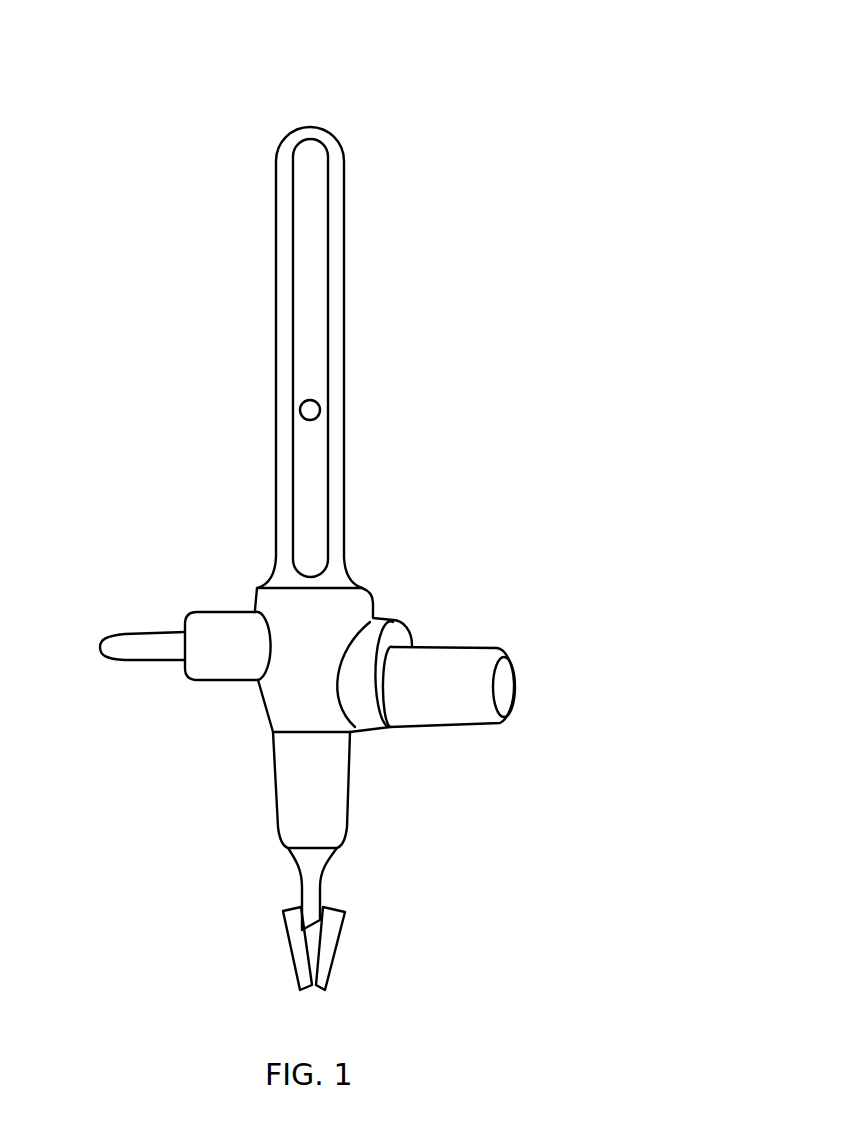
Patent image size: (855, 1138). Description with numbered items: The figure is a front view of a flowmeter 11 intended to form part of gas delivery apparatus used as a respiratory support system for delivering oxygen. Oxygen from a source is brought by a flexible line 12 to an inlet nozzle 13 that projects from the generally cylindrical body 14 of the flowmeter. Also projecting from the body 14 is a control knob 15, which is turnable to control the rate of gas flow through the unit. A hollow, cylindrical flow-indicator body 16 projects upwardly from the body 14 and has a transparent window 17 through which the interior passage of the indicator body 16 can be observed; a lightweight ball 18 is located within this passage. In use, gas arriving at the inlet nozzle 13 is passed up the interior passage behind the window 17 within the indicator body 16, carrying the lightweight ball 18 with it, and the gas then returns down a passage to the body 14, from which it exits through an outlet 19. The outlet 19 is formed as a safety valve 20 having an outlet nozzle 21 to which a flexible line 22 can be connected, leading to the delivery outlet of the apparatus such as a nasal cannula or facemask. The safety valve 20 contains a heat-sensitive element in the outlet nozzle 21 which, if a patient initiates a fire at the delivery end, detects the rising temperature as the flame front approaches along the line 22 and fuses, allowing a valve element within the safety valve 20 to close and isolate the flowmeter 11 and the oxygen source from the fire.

The flowmeter 11 is at (435, 131).
The flexible line 12 is at (102, 638).
The inlet nozzle 13 is at (180, 625).
The body 14 is at (258, 688).
The control knob 15 is at (497, 648).
The flow-indicator body 16 is at (276, 245).
The transparent window 17 is at (330, 343).
The lightweight ball 18 is at (300, 410).
The outlet 19 is at (382, 830).
The safety valve 20 is at (275, 785).
The outlet nozzle 21 is at (317, 892).
The flexible line 22 is at (340, 940).